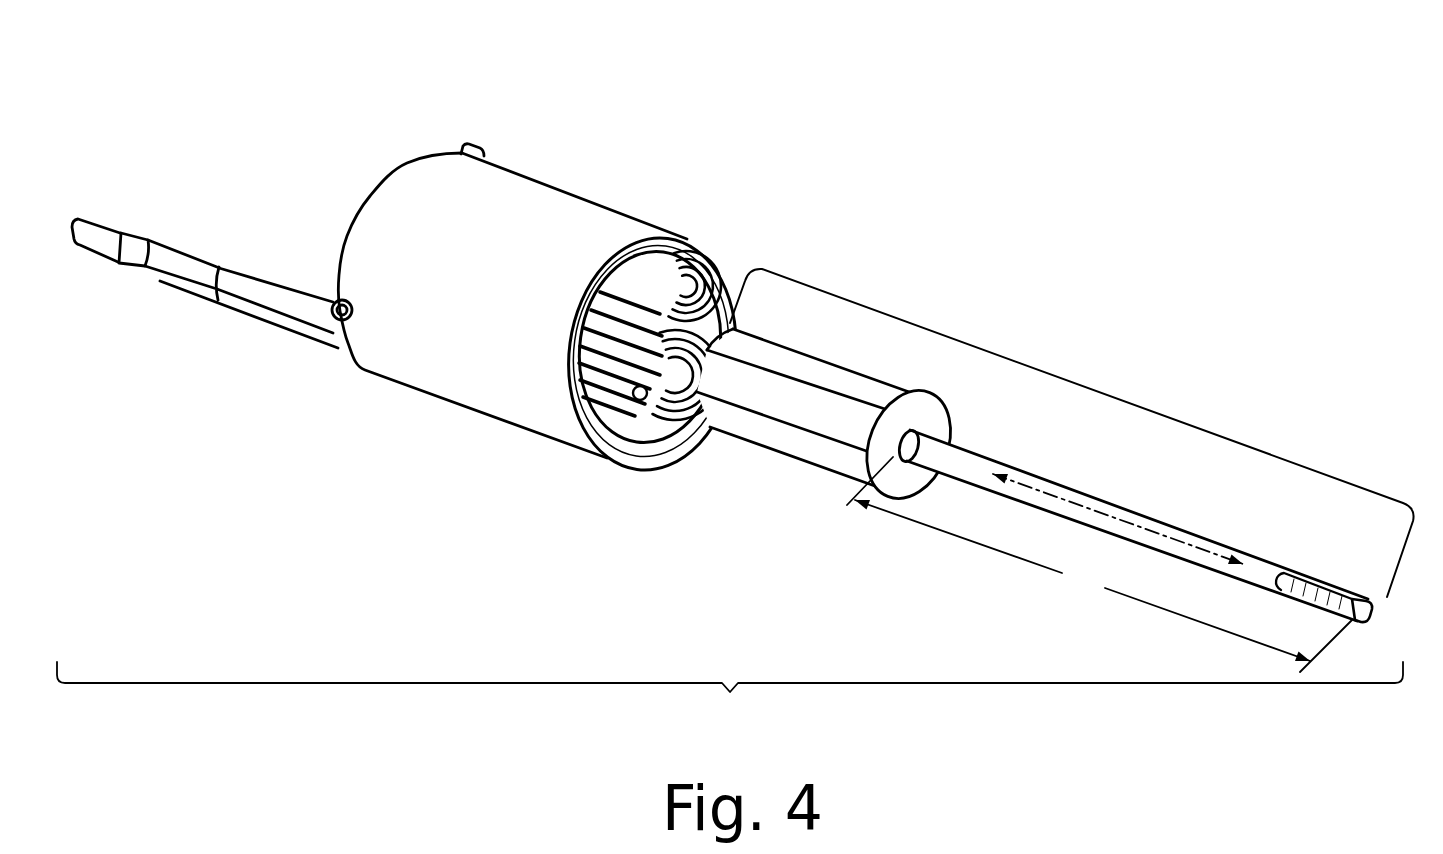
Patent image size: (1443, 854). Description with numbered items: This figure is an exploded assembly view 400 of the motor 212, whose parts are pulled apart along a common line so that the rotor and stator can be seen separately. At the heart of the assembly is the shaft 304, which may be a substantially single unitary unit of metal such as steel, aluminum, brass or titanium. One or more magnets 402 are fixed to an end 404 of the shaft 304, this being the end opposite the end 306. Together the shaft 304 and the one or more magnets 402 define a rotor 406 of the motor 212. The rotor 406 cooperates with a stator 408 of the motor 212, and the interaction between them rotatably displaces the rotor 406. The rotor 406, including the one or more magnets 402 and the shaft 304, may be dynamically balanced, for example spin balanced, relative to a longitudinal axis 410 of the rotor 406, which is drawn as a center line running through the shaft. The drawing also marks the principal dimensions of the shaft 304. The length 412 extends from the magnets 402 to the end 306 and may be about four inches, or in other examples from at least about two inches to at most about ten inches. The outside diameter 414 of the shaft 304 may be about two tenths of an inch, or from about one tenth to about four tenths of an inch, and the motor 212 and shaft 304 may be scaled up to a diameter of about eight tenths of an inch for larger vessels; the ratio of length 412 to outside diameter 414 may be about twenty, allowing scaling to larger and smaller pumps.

The motor 212 is at (396, 73).
The magnets 402 is at (846, 364).
The end of the shaft 404 is at (715, 447).
The rotor 406 is at (1085, 386).
The stator 408 is at (640, 394).
The shaft 304 is at (1093, 493).
The end of the shaft 306 is at (1374, 609).
The longitudinal axis 410 is at (1164, 535).
The length 412 is at (1099, 564).
The outside diameter 414 is at (1233, 622).
The exploded assembly view 400 is at (730, 692).